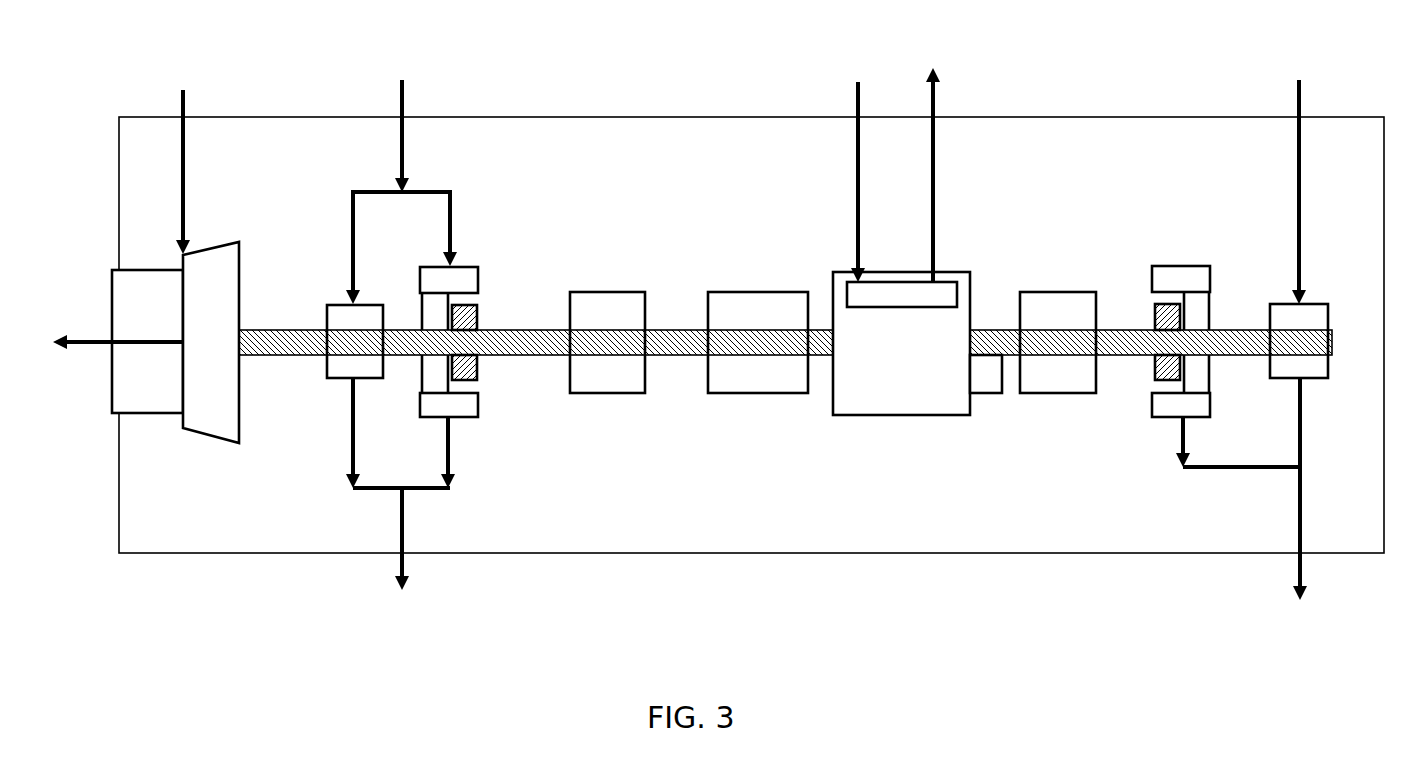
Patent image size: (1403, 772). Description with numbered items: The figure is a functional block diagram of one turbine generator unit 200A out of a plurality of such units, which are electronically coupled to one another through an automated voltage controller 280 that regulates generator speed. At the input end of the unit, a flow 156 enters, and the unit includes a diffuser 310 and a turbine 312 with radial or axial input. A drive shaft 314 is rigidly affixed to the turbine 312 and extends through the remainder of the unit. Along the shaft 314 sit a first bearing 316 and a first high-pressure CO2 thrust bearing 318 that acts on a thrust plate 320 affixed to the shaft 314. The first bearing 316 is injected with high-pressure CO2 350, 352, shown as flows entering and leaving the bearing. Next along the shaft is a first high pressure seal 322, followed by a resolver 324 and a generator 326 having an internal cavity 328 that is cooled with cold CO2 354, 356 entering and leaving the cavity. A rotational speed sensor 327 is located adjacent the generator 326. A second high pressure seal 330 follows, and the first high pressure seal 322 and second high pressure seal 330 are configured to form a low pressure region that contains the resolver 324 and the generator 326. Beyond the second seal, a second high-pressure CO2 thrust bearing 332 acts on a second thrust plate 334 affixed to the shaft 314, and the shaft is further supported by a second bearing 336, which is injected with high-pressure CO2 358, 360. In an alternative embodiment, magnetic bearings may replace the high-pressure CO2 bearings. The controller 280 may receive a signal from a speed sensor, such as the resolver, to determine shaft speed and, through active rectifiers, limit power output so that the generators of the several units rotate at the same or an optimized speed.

The turbine generator unit 200A is at (513, 116).
The fuel/steam inlet flow 156 is at (182, 158).
The automated voltage controller 280 is at (102, 348).
The diffuser 310 is at (147, 341).
The turbine 312 is at (211, 342).
The drive shaft 314 is at (310, 357).
The first bearing 316 is at (327, 303).
The first high-pressure CO2 thrust bearing 318 is at (467, 275).
The thrust plate 320 is at (477, 320).
The first high pressure seal 322 is at (620, 393).
The resolver 324 is at (735, 395).
The generator 326 is at (892, 415).
The rotational speed sensor 327 is at (985, 393).
The internal cavity 328 is at (947, 288).
The second high pressure seal 330 is at (1047, 295).
The second high-pressure CO2 thrust bearing 332 is at (1180, 267).
The thrust plate 334 is at (1155, 368).
The second bearing 336 is at (1320, 302).
The high-pressure CO2 350 is at (401, 178).
The high-pressure CO2 352 is at (400, 510).
The cold CO2 354 is at (857, 160).
The cold CO2 356 is at (936, 160).
The high-pressure CO2 358 is at (1297, 176).
The high-pressure CO2 360 is at (1248, 510).